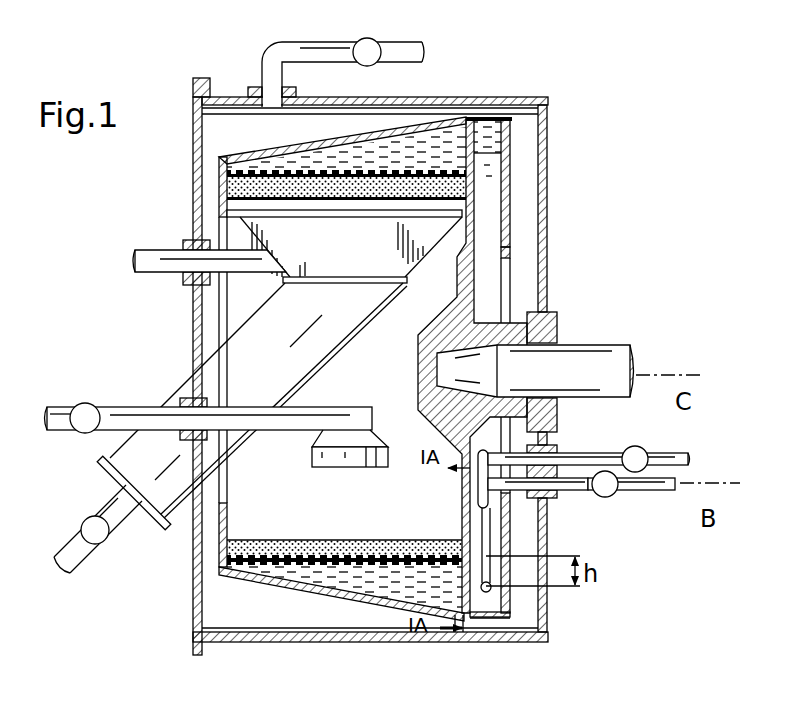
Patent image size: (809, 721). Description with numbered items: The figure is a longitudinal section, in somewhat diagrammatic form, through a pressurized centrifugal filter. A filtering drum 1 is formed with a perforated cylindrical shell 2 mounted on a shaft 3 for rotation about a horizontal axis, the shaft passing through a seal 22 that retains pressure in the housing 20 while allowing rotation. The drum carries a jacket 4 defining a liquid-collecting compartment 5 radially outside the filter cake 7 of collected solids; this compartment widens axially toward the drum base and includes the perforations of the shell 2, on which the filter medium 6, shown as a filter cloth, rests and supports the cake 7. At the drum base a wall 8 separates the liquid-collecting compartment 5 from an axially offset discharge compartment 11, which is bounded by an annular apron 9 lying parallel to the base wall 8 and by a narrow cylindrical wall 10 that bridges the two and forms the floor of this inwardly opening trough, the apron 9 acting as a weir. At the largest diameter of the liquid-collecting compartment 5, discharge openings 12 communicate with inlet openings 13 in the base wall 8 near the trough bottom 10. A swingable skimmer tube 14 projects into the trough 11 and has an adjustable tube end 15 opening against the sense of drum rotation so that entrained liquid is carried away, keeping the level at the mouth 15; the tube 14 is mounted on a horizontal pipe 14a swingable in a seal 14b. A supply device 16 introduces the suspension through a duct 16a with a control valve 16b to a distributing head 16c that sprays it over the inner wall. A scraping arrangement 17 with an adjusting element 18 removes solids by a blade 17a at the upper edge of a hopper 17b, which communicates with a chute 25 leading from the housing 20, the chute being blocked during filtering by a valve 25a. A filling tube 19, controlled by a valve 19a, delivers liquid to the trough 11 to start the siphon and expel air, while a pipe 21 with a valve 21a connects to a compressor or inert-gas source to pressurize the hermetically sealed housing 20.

The filtering drum 1 is at (524, 149).
The perforated cylindrical shell 2 is at (219, 563).
The shaft 3 is at (613, 401).
The jacket 4 is at (330, 591).
The liquid-collecting compartment 5 is at (272, 568).
The filter medium 6 is at (262, 546).
The filter cake 7 is at (401, 541).
The drum base wall 8 is at (461, 294).
The annular wall or apron 9 is at (524, 178).
The cylindrical wall 10 is at (497, 117).
The discharge compartment 11 is at (500, 216).
The discharge openings 12 is at (455, 641).
The inlet openings 13 is at (476, 641).
The skimmer tube 14 is at (489, 541).
The horizontal pipe 14a is at (649, 492).
The seal 14b is at (566, 492).
The tube end 15 is at (509, 613).
The supply device 16 is at (312, 469).
The duct 16a is at (60, 432).
The control valve 16b is at (86, 403).
The distributing head 16c is at (345, 471).
The scraping arrangement 17 is at (243, 230).
The blade 17a is at (222, 186).
The hopper 17b is at (393, 293).
The adjusting element 18 is at (144, 258).
The filling tube 19 is at (478, 481).
The valve 19a is at (655, 445).
The housing 20 is at (196, 80).
The pipe 21 is at (278, 44).
The valve 21a is at (394, 43).
The seal 22 is at (556, 331).
The chute 25 is at (319, 333).
The valve 25a is at (108, 546).